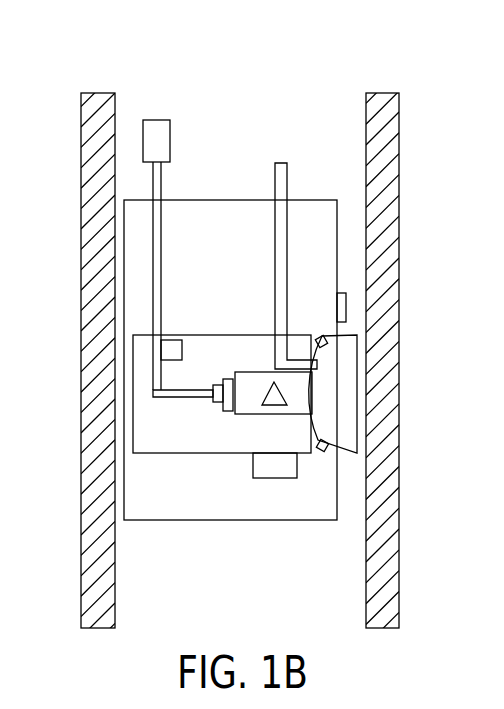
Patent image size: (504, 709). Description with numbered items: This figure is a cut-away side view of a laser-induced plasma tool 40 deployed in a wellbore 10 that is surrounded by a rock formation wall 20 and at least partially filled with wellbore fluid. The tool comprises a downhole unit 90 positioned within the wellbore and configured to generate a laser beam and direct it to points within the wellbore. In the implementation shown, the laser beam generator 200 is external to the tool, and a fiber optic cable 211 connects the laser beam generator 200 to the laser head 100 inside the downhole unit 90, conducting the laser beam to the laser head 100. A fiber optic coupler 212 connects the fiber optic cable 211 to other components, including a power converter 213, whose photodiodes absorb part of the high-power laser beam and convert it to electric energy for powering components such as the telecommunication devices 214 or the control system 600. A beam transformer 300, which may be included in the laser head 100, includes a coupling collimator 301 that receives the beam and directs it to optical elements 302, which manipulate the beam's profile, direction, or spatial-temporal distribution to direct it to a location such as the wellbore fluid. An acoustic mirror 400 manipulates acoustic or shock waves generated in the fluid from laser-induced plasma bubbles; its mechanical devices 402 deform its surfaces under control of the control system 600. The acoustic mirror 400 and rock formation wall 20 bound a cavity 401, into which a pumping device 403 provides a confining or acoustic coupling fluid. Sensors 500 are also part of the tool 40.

The wellbore 10 is at (290, 326).
The rock formation wall 20 is at (385, 143).
The laser-induced plasma tool 40 is at (304, 94).
The downhole unit 90 is at (217, 200).
The laser head 100 is at (198, 334).
The laser beam generator 200 is at (152, 120).
The fiber optic cable 211 is at (161, 177).
The fiber optic coupler 212 is at (218, 385).
The power converter 213 is at (222, 412).
The telecommunication devices 214 is at (166, 350).
The beam transformer 300 is at (255, 415).
The coupling collimator 301 is at (230, 413).
The optical elements 302 is at (274, 408).
The acoustic mirror 400 is at (387, 406).
The cavity 401 is at (347, 397).
The mechanical devices 402 is at (328, 340).
The pumping device 403 is at (287, 178).
The sensors 500 is at (347, 300).
The control system 600 is at (275, 479).